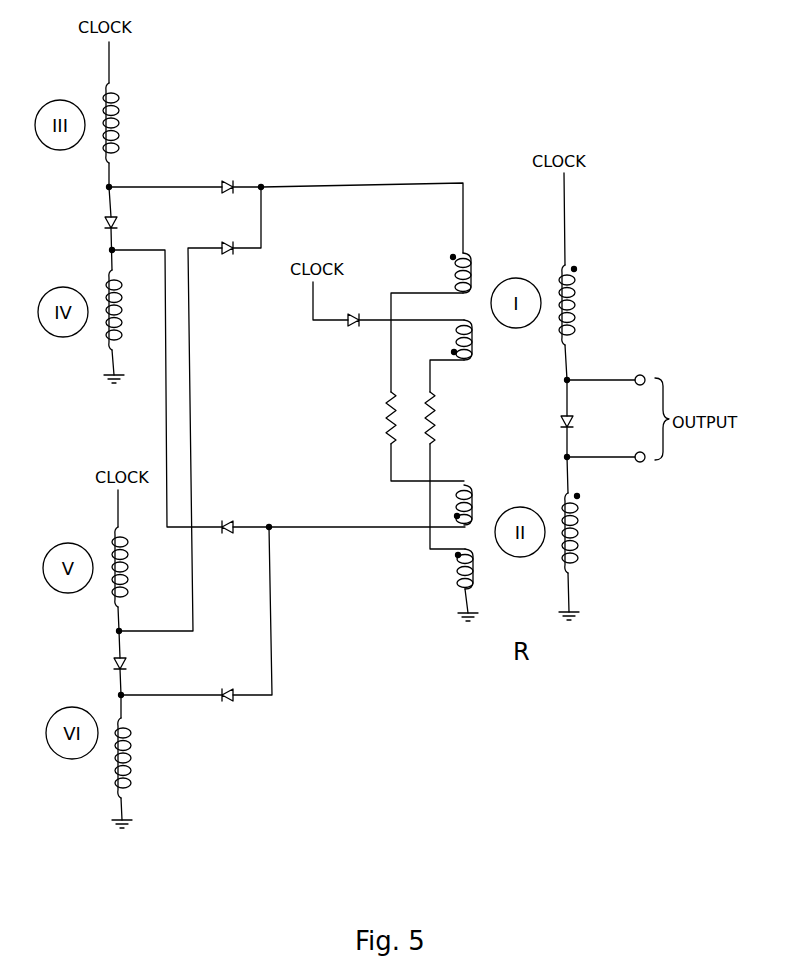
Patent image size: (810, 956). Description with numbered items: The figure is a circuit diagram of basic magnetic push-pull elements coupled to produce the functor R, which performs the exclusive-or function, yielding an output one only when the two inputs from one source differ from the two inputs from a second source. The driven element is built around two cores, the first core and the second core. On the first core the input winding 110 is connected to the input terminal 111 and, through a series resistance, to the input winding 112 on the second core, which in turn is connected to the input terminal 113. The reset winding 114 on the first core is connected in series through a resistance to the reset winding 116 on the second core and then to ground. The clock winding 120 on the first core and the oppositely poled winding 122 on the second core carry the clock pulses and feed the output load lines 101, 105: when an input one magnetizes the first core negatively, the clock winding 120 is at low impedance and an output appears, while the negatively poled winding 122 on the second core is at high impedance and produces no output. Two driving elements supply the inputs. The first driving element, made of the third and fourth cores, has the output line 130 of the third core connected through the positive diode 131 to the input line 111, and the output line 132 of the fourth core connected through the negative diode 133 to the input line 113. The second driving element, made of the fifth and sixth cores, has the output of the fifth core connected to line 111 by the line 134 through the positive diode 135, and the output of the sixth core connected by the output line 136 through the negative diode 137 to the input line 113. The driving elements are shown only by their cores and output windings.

The output load line 101 is at (602, 377).
The output load line 105 is at (620, 462).
The input winding 110 is at (471, 255).
The input terminal 111 is at (386, 182).
The input winding 112 is at (479, 495).
The input terminal 113 is at (335, 529).
The reset winding 114 is at (474, 350).
The reset winding 116 is at (477, 576).
The clock winding 120 is at (579, 295).
The winding 122 is at (579, 545).
The output line 130 is at (194, 186).
The positive diode 131 is at (228, 180).
The output line 132 is at (165, 250).
The negative diode 133 is at (224, 521).
The line 134 is at (191, 407).
The positive diode 135 is at (218, 250).
The output line 136 is at (179, 698).
The negative diode 137 is at (223, 690).